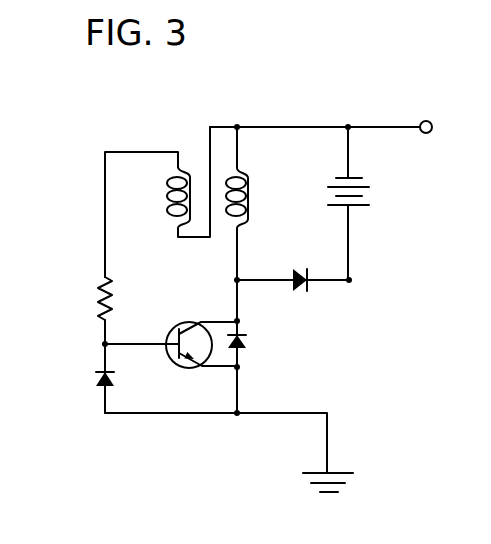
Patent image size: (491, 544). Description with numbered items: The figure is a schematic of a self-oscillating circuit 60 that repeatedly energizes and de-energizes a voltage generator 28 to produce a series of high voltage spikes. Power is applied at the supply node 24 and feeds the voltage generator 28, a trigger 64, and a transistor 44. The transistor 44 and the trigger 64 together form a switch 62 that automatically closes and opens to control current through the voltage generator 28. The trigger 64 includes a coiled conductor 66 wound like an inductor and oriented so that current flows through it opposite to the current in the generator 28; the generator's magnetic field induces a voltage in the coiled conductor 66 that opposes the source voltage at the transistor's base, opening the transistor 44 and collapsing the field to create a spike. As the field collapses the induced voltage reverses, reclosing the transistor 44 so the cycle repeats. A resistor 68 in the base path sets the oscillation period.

The supply node 24 is at (348, 127).
The voltage generator 28 is at (254, 115).
The transistor 44 is at (175, 307).
The circuit 60 is at (99, 137).
The switch 62 is at (92, 223).
The trigger 64 is at (160, 133).
The coiled conductor 66 is at (193, 189).
The resistor 68 is at (98, 293).